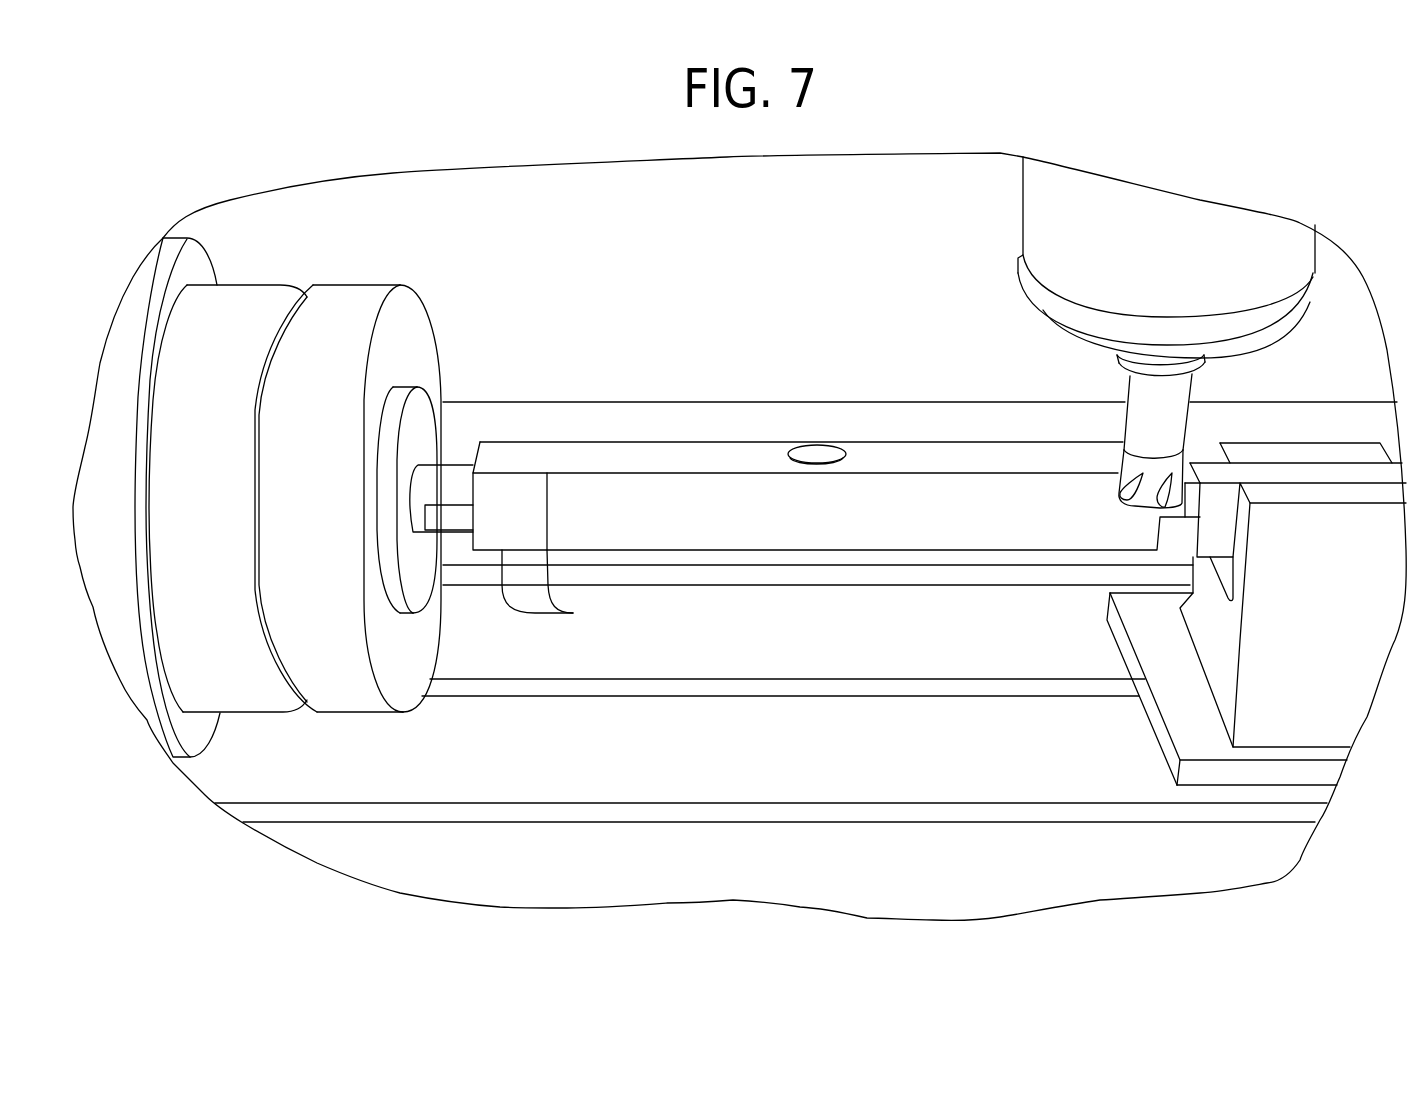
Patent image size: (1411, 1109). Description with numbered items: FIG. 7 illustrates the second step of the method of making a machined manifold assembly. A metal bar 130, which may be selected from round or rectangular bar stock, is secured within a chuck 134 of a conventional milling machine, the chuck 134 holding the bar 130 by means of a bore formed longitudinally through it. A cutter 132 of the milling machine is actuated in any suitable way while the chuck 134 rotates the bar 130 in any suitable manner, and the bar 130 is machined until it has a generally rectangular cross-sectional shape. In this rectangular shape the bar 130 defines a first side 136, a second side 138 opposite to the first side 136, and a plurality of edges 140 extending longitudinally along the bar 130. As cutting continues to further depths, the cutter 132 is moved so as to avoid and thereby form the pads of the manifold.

The bar 130 is at (583, 453).
The cutter 132 is at (1130, 463).
The chuck 134 is at (408, 423).
The first side 136 is at (700, 468).
The second side 138 is at (720, 550).
The edges 140 is at (905, 402).